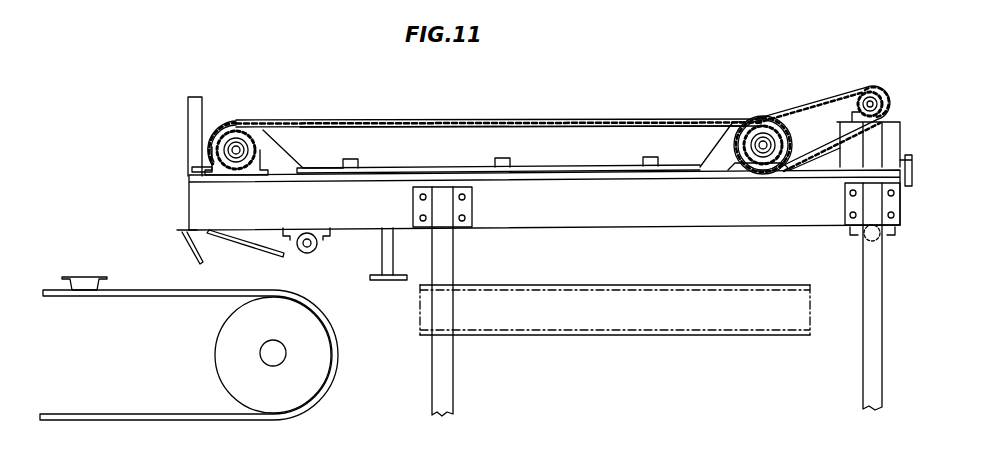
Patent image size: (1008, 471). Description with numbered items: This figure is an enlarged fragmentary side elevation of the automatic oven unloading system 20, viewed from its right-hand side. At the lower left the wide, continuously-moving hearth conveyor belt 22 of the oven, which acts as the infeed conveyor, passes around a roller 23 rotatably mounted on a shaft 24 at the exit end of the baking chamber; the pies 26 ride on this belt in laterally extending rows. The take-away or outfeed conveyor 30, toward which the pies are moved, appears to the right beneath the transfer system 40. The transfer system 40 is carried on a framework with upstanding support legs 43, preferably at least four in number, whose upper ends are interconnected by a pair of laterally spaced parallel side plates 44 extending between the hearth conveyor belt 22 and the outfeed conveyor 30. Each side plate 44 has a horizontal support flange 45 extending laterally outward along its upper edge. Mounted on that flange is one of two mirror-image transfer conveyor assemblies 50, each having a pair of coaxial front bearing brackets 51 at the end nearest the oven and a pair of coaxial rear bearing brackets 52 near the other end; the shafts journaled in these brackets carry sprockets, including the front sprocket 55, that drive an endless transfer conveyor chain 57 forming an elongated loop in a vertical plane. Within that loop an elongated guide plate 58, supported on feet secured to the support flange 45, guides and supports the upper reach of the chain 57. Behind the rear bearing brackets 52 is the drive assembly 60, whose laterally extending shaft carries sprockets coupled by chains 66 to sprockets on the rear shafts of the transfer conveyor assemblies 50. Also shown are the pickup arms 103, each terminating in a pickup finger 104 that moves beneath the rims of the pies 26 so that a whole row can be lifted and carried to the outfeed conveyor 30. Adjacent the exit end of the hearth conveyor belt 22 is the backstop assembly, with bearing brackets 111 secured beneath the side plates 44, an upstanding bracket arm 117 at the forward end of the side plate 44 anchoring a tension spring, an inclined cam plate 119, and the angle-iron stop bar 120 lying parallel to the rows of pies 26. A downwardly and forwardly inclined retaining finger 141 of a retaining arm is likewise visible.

The automatic oven unloading system 20 is at (645, 39).
The hearth conveyor belt 22 is at (156, 297).
The roller 23 is at (226, 379).
The shaft 24 is at (260, 352).
The pies 26 is at (92, 277).
The outfeed conveyor 30 is at (690, 338).
The transfer system 40 is at (340, 74).
The support legs 43 is at (453, 380).
The side plates 44 is at (616, 212).
The support flange 45 is at (579, 172).
The transfer conveyor assembly 50 is at (242, 106).
The front bearing brackets 51 is at (233, 167).
The rear bearing brackets 52 is at (779, 160).
The sprocket 55 is at (259, 137).
The transfer conveyor chain 57 is at (460, 119).
The guide plate 58 is at (584, 128).
The drive assembly 60 is at (822, 82).
The chains 66 is at (790, 110).
The pickup arms 103 is at (382, 249).
The pickup finger 104 is at (383, 279).
The bearing brackets 111 is at (313, 254).
The bracket arm 117 is at (188, 116).
The cam plate 119 is at (266, 256).
The stop bar 120 is at (196, 249).
The retaining finger 141 is at (731, 227).